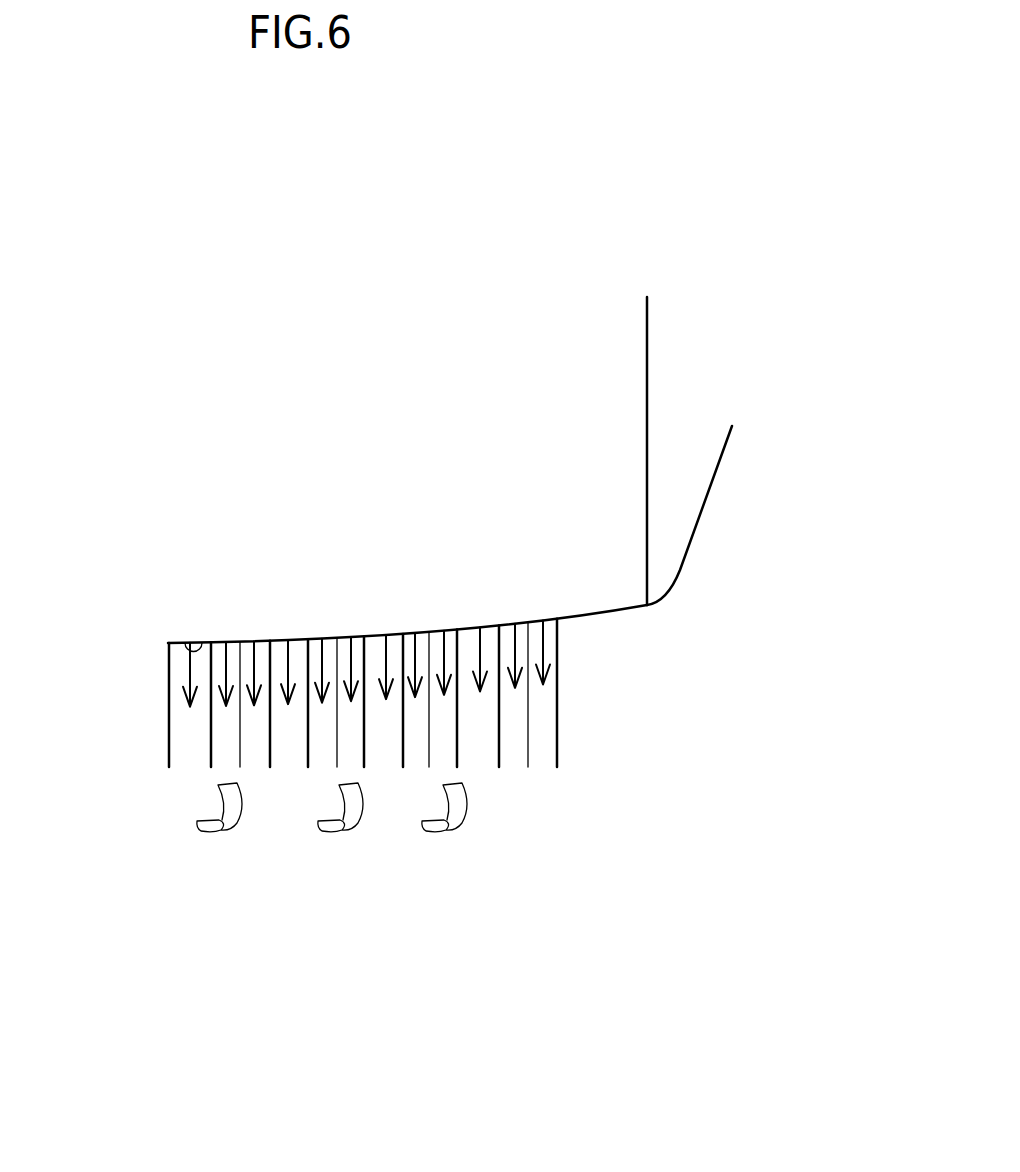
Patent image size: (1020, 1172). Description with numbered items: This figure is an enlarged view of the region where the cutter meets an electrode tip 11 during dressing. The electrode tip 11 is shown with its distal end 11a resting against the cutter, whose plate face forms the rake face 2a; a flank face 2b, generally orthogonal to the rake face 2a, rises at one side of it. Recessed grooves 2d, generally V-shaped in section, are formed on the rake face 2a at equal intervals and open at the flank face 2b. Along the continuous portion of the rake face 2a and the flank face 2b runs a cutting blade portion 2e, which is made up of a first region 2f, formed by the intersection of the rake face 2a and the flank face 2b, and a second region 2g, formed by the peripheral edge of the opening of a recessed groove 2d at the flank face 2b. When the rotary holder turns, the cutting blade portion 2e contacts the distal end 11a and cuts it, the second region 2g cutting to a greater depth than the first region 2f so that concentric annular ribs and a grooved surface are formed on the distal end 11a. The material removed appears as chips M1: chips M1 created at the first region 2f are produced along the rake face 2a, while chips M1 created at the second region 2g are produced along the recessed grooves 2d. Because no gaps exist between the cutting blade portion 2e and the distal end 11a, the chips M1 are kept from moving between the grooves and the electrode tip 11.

The electrode tip 11 is at (648, 407).
The distal end 11a is at (183, 643).
The rake face 2a is at (467, 582).
The flank face 2b is at (720, 452).
The recessed groove 2d is at (535, 635).
The cutting blade portion 2e is at (347, 578).
The first region 2f is at (193, 642).
The second region 2g is at (233, 642).
The chip M1 is at (228, 832).